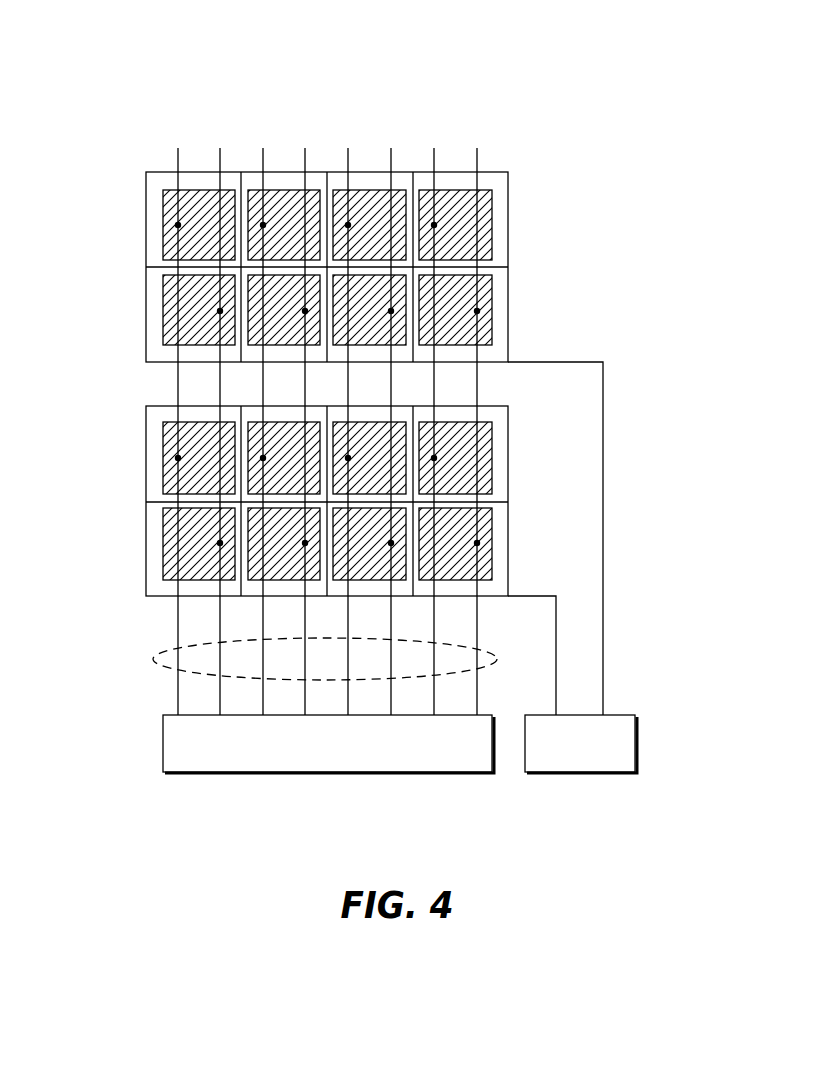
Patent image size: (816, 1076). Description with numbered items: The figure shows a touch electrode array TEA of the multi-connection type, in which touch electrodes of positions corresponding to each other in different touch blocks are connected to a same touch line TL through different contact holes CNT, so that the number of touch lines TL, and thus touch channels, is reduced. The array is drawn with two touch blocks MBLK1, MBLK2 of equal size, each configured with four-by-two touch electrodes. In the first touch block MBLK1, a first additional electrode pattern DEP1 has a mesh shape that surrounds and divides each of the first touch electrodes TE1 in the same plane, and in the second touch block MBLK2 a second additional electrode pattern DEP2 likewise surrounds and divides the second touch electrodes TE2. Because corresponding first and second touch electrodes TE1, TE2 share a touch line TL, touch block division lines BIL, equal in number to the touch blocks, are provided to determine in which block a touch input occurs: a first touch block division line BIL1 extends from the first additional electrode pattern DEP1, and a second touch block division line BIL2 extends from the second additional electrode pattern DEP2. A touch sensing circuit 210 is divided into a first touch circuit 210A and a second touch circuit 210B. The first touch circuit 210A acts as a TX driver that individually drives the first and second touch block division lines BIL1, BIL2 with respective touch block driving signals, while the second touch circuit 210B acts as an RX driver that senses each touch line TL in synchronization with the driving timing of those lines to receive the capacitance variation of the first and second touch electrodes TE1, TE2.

The touch electrode array TEA is at (137, 82).
The first touch block MBLK1 is at (324, 359).
The second touch block MBLK2 is at (324, 501).
The first additional electrode pattern DEP1 is at (508, 183).
The second additional electrode pattern DEP2 is at (508, 416).
The first touch electrodes TE1 is at (492, 222).
The second touch electrodes TE2 is at (492, 455).
The contact holes CNT is at (477, 311).
The touch line TL is at (497, 655).
The touch block division lines BIL is at (680, 611).
The first touch block division line BIL1 is at (603, 614).
The second touch block division line BIL2 is at (556, 678).
The touch sensing circuit 210 is at (163, 782).
The first touch circuit 210A is at (581, 744).
The second touch circuit 210B is at (328, 744).